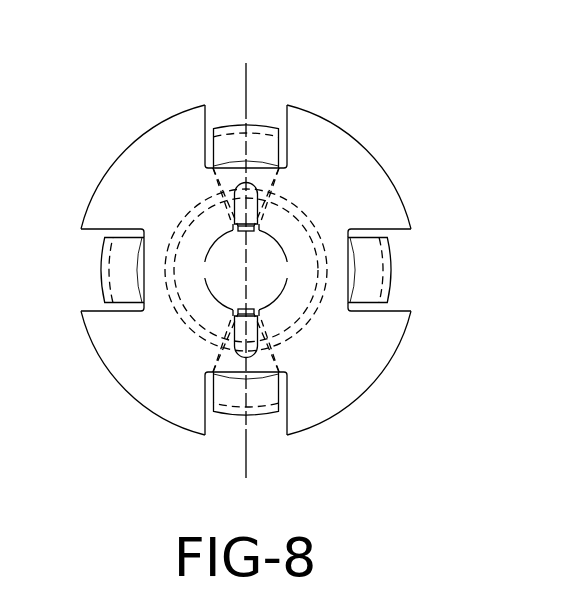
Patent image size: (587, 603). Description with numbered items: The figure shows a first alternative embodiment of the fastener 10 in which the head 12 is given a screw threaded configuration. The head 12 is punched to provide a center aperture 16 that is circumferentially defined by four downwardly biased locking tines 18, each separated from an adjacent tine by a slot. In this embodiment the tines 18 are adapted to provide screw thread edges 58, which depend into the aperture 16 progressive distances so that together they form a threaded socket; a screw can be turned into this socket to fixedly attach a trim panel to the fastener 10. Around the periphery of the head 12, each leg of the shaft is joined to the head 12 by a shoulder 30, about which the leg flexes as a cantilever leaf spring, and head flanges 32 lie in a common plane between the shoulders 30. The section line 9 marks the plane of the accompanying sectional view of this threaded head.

The section line 9- 9 is at (207, 478).
The fastener 10 is at (405, 68).
The head 12 is at (343, 423).
The center aperture 16 is at (252, 282).
The locking tine 18 is at (205, 298).
The shoulder 30 is at (365, 275).
The head flange 32 is at (388, 208).
The screw thread edge 58 is at (188, 208).